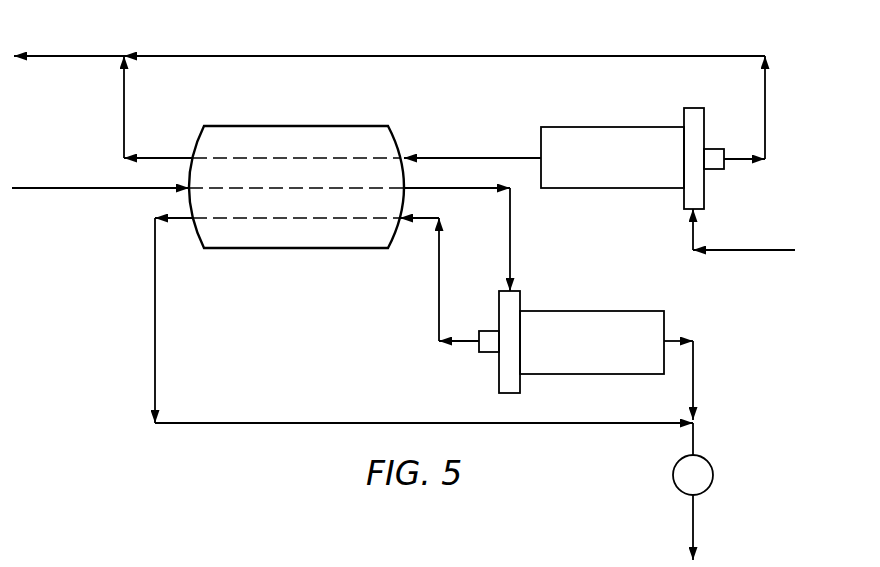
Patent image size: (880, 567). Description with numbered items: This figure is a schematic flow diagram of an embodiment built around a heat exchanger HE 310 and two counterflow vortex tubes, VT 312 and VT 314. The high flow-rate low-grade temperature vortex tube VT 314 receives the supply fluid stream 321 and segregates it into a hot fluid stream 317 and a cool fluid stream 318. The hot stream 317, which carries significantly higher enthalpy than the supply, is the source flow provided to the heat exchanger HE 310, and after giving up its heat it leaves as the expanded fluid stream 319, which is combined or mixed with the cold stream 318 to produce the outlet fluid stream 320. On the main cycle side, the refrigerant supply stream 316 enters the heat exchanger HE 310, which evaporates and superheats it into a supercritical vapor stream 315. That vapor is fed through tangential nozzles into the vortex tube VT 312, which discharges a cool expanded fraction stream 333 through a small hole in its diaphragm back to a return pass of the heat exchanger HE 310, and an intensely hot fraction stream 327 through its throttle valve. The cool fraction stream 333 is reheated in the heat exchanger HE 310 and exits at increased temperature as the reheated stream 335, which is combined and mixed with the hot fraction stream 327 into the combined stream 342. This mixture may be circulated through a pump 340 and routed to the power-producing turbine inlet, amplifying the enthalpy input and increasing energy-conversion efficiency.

The heat exchanger HE 310 is at (296, 126).
The counterflow vortex tube VT 312 is at (612, 311).
The counterflow vortex tube VT 314 is at (622, 127).
The hot fluid stream T1 315 is at (512, 250).
The supply fluid stream T8 316 is at (113, 190).
The hot fluid stream TH 317 is at (500, 156).
The cool fluid stream TC 318 is at (571, 56).
The expanded fluid stream TE 319 is at (121, 105).
The fluid stream TB 320 is at (104, 55).
The supply fluid stream T0 321 is at (728, 252).
The intensely hot vapor stream T3 327 is at (696, 393).
The cool expanded vapor stream T2 333 is at (437, 296).
The stream T4 335 is at (152, 367).
The pump 340 is at (713, 478).
The stream T5 342 is at (690, 510).